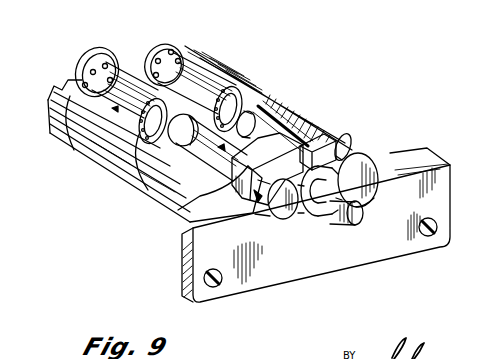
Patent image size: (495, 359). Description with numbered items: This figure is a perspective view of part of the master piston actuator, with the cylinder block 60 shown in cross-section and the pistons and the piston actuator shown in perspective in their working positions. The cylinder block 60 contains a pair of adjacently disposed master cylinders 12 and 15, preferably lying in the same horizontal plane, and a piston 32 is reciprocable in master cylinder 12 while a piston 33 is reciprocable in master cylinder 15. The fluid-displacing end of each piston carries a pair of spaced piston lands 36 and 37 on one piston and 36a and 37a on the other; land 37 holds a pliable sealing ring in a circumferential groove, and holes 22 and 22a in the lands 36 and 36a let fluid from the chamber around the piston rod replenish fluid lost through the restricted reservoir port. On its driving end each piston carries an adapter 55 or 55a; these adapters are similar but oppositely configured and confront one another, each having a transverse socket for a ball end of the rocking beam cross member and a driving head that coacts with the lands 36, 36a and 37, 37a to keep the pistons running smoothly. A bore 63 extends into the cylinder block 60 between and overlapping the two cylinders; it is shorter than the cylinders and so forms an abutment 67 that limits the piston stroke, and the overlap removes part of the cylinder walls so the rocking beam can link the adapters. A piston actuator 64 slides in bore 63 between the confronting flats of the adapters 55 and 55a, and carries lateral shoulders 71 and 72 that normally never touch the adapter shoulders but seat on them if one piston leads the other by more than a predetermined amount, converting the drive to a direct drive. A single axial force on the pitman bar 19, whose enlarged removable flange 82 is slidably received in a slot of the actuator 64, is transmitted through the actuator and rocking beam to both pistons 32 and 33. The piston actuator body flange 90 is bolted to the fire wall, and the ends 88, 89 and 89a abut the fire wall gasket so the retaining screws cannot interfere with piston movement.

The master cylinder portion 12 is at (50, 112).
The master cylinder portion 15 is at (293, 120).
The pitman bar 19 is at (366, 223).
The holes 22 is at (108, 60).
The holes 22a is at (180, 50).
The piston 32 is at (107, 115).
The piston 33 is at (195, 73).
The piston land 36 is at (100, 52).
The piston land 36a is at (156, 48).
The piston land 37 is at (148, 118).
The piston land 37a is at (237, 86).
The adapter 55 is at (266, 214).
The adapter 55a is at (356, 153).
The cylinder block 60 is at (139, 199).
The bore 63 is at (245, 147).
The piston actuator 64 is at (283, 152).
The abutment 67 is at (242, 140).
The shoulder 71 is at (302, 166).
The shoulder 72 is at (338, 150).
The flange 82 is at (334, 222).
The end 88 is at (304, 218).
The end 89 is at (292, 222).
The end 89a is at (373, 197).
The piston actuator body flange 90 is at (448, 197).